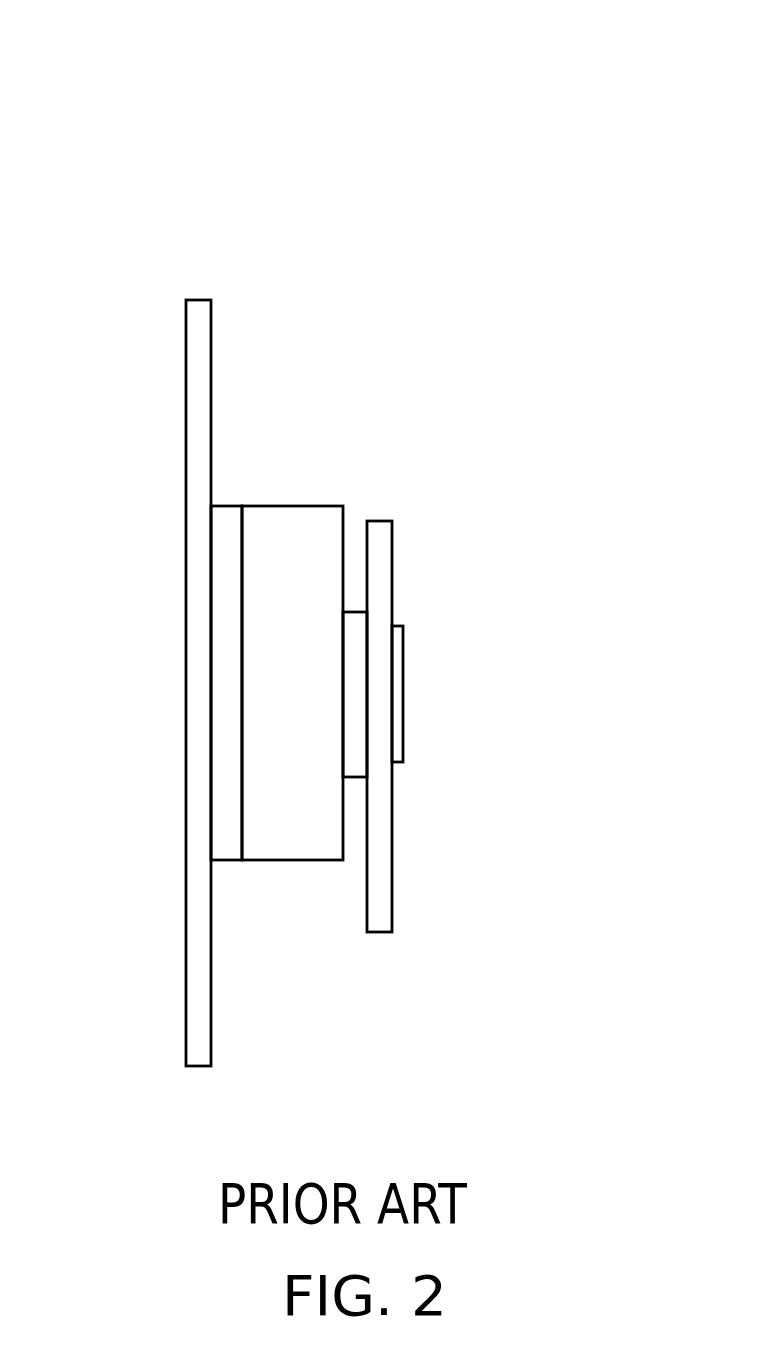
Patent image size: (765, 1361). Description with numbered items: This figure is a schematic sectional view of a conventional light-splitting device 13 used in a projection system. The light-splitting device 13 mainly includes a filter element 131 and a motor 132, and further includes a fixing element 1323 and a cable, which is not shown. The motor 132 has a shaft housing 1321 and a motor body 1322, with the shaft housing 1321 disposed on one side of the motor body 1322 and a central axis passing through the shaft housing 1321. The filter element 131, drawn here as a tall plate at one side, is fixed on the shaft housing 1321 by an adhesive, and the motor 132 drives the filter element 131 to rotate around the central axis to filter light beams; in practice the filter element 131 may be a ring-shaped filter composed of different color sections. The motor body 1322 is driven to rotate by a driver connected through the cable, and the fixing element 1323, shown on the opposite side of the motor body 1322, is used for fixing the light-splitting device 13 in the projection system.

The light-splitting device 13 is at (100, 47).
The filter element 131 is at (197, 457).
The motor 132 is at (434, 605).
The shaft housing 1321 is at (229, 517).
The motor body 1322 is at (311, 517).
The fixing element 1323 is at (382, 930).